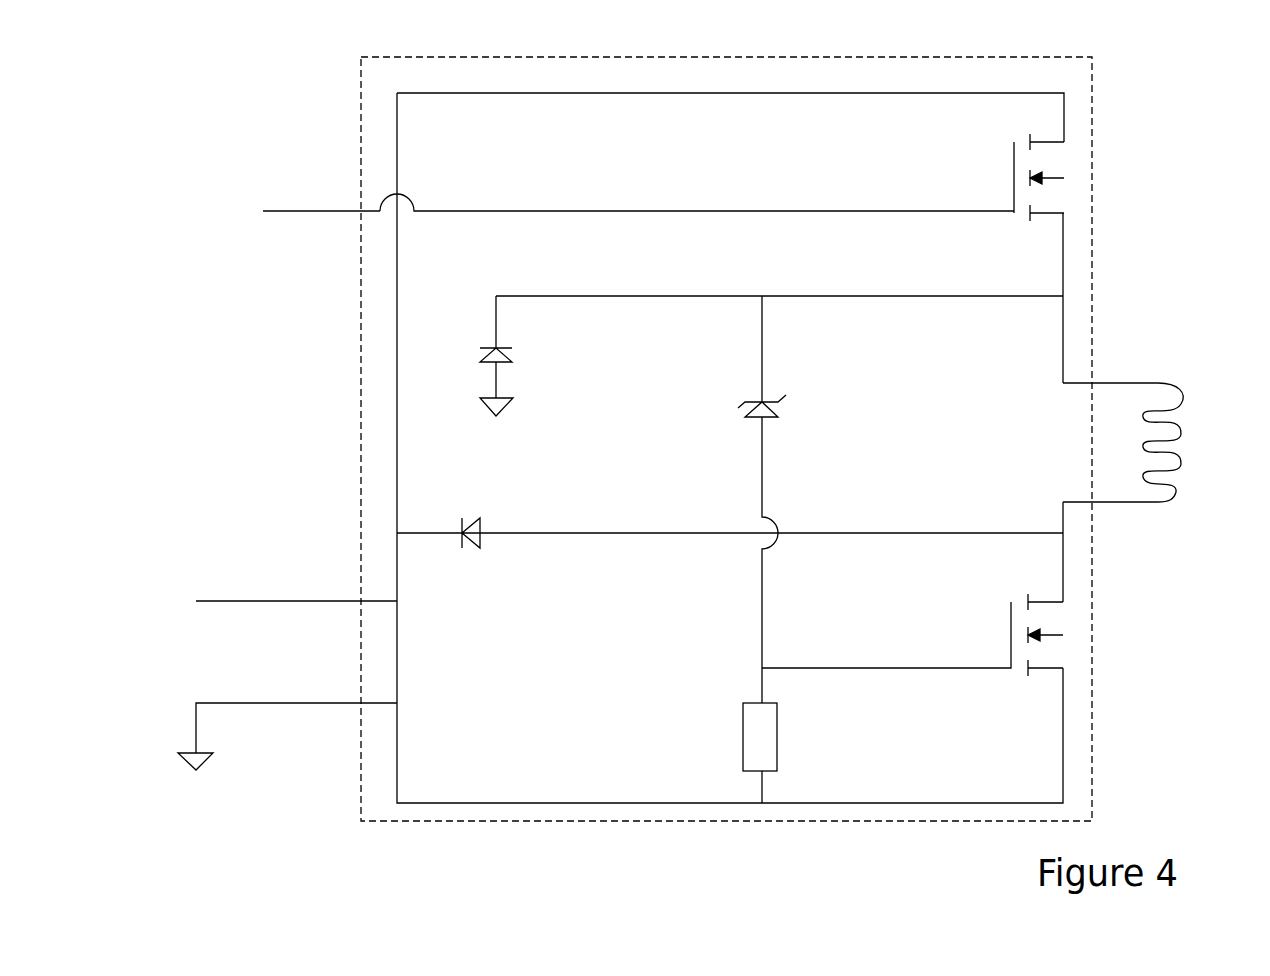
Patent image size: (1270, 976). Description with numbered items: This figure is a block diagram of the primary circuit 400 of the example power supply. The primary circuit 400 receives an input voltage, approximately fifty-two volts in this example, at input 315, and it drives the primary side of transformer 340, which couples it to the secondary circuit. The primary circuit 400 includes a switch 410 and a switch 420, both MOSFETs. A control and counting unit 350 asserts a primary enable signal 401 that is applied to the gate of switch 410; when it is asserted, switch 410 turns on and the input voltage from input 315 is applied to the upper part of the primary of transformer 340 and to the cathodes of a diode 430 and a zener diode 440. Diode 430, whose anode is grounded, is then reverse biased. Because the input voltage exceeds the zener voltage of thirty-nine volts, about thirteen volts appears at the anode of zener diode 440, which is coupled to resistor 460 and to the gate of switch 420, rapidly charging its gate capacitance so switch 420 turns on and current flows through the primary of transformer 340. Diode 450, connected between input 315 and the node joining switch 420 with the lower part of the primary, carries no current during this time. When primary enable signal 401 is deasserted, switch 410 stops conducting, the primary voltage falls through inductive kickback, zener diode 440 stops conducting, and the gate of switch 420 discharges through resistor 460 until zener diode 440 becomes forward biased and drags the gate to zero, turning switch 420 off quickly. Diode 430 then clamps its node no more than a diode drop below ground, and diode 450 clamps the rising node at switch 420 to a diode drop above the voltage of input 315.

The primary circuit 400 is at (698, 425).
The primary enable signal 401 is at (697, 194).
The switch 410 is at (1011, 177).
The switch 420 is at (912, 635).
The diode 430 is at (517, 356).
The zener diode 440 is at (782, 499).
The diode 450 is at (730, 521).
The resistor 460 is at (777, 753).
The transformer 340 is at (1159, 467).
The control and counting unit 350 is at (236, 236).
The input 315 is at (245, 600).